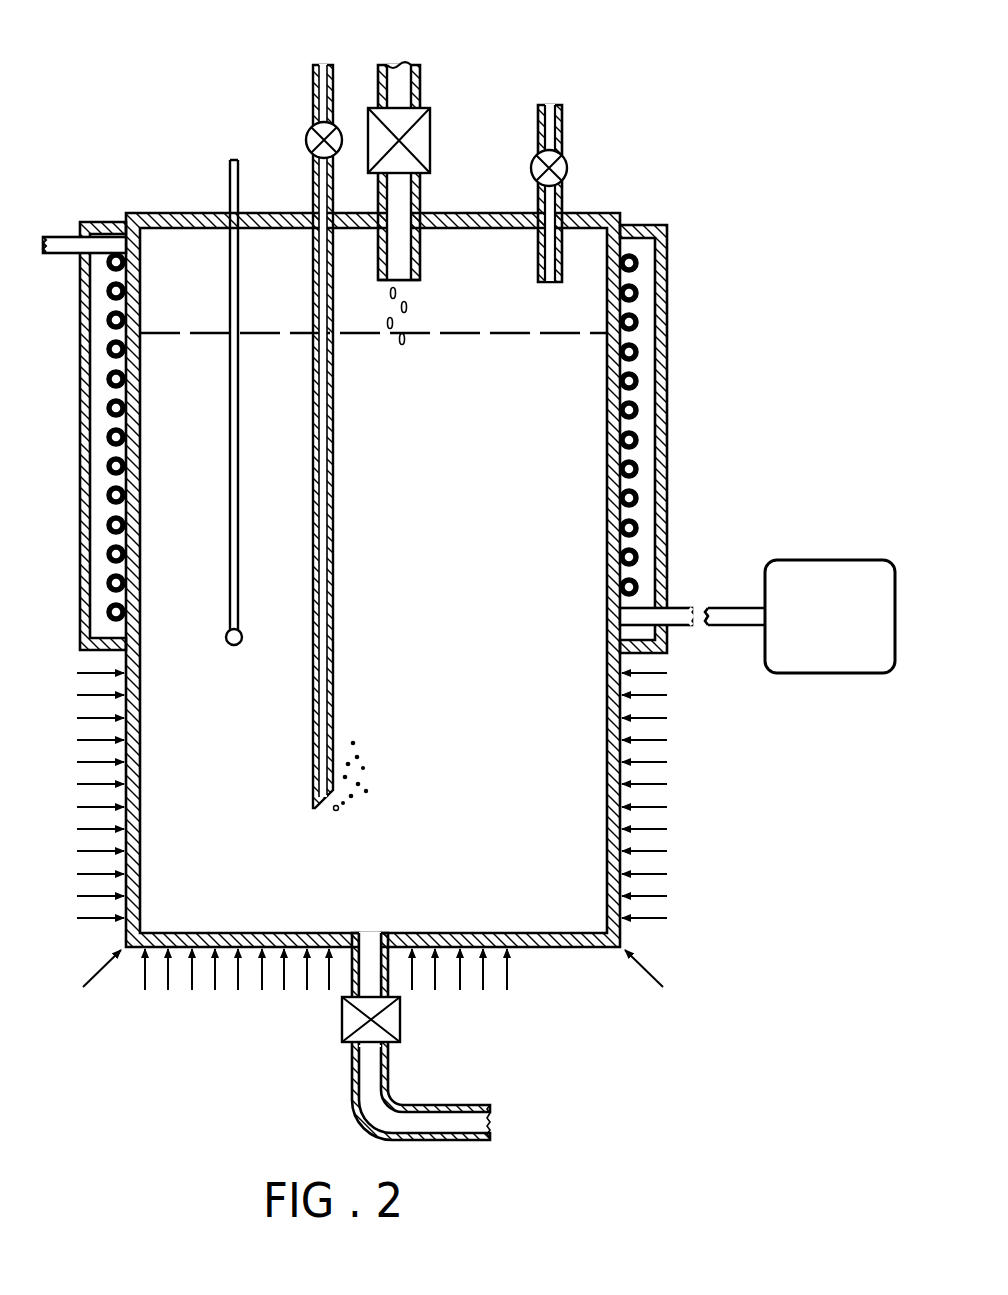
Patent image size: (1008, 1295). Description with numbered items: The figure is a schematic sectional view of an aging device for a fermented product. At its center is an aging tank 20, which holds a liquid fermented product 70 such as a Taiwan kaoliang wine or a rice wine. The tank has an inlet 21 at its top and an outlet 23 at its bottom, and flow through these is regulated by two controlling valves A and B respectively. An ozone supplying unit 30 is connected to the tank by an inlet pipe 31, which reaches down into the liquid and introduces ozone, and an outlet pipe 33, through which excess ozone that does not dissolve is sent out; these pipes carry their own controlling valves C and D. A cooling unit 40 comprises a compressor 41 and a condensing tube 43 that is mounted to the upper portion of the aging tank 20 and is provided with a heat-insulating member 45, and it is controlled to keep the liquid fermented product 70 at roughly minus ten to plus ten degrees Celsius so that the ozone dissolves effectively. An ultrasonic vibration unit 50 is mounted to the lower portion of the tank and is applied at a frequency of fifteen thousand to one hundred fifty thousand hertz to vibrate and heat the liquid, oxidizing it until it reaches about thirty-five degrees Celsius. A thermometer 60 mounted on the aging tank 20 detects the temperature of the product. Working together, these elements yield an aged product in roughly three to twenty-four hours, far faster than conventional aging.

The aging tank 20 is at (505, 213).
The inlet 21 is at (424, 203).
The outlet 23 is at (388, 1036).
The ozone supplying unit 30 is at (295, 407).
The inlet pipe 31 is at (313, 186).
The outlet pipe 33 is at (584, 192).
The cooling unit 40 is at (469, 447).
The compressor 41 is at (833, 565).
The condensing tube 43 is at (636, 497).
The heat-insulating member 45 is at (662, 338).
The ultrasonic vibration unit 50 is at (692, 790).
The thermometer 60 is at (224, 188).
The liquid fermented product 70 is at (207, 915).
The controlling valve A is at (430, 122).
The controlling valve B is at (350, 1023).
The controlling valve C is at (311, 128).
The controlling valve D is at (563, 158).